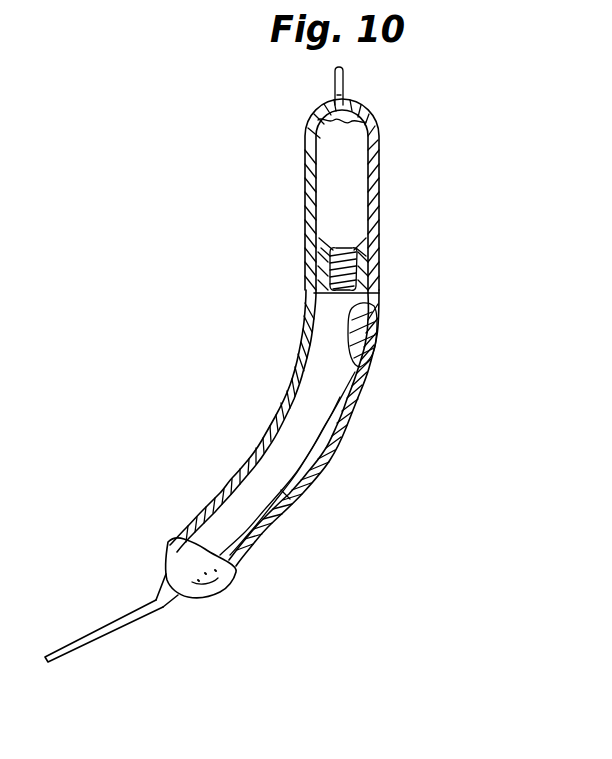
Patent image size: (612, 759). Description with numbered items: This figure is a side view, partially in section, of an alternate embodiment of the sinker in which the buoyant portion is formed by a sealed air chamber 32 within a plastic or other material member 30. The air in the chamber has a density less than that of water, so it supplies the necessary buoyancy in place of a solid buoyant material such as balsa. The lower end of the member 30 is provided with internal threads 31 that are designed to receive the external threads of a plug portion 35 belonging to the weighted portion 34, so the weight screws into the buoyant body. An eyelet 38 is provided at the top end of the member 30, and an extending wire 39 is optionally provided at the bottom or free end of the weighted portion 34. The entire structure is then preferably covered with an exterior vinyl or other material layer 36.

The member 30 is at (377, 167).
The internal threads 31 is at (362, 272).
The sealed air chamber 32 is at (352, 215).
The weighted portion 34 is at (296, 503).
The plug portion 35 is at (345, 294).
The exterior vinyl or other material layer 36 is at (320, 262).
The eyelet 38 is at (343, 72).
The extending wire 39 is at (120, 622).